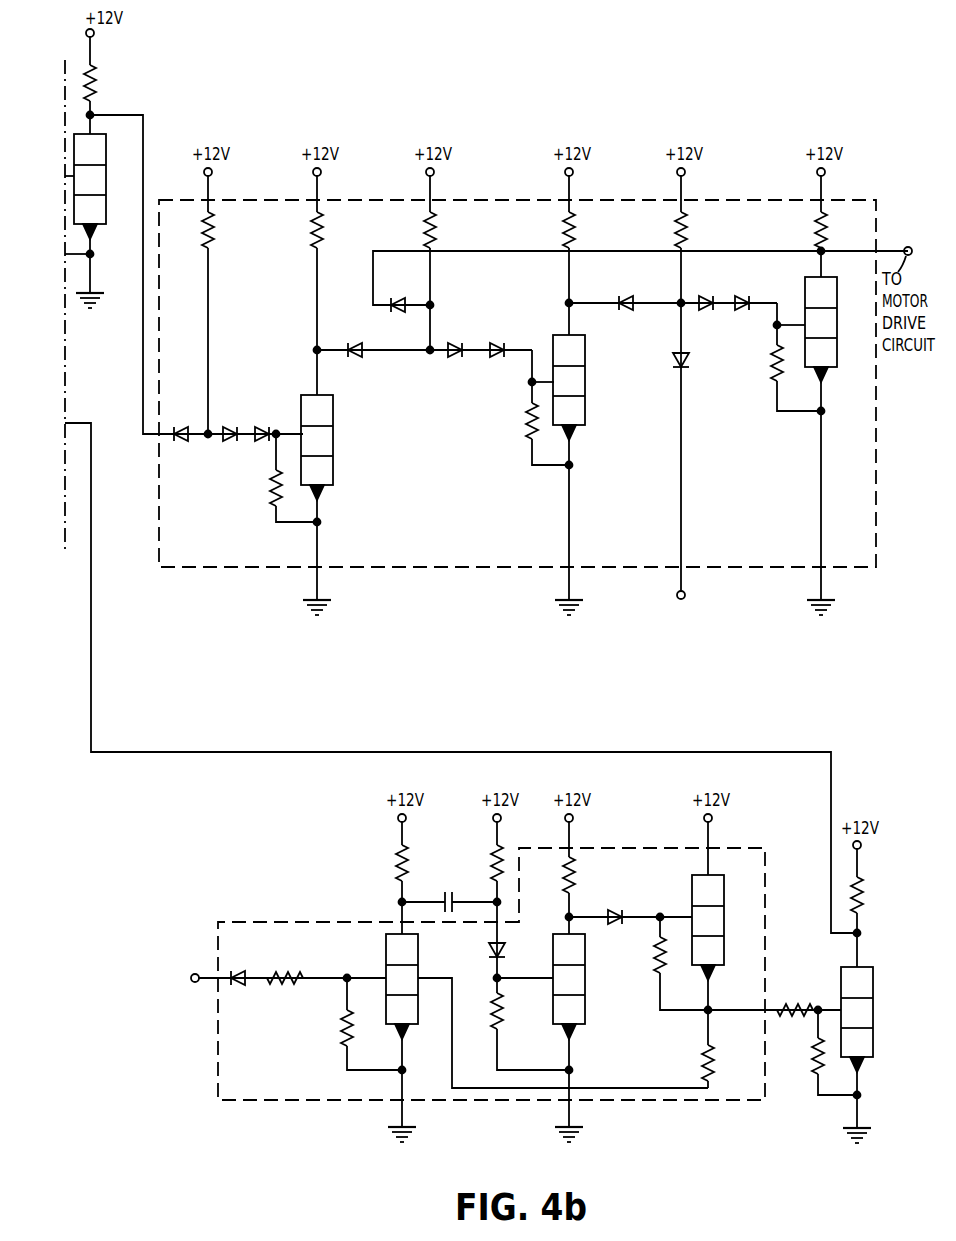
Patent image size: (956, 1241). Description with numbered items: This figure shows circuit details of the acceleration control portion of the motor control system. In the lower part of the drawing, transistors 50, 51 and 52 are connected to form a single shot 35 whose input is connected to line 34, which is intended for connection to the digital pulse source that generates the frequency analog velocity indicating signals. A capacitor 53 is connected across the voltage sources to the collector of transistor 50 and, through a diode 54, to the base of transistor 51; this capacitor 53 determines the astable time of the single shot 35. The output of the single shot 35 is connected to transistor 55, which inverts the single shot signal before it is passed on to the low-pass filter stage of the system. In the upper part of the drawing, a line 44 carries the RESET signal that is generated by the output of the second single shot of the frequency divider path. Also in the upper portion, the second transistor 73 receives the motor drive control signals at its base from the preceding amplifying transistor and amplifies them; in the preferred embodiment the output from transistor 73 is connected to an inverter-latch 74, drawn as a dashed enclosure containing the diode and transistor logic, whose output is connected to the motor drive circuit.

The line 34 is at (191, 975).
The single shot 35 is at (218, 1029).
The line 44 is at (685, 598).
The transistor 50 is at (386, 955).
The transistor 51 is at (587, 980).
The transistor 52 is at (692, 889).
The capacitor 53 is at (449, 893).
The diode 54 is at (489, 950).
The transistor 55 is at (841, 973).
The second transistor 73 is at (107, 156).
The inverter-latch 74 is at (465, 567).